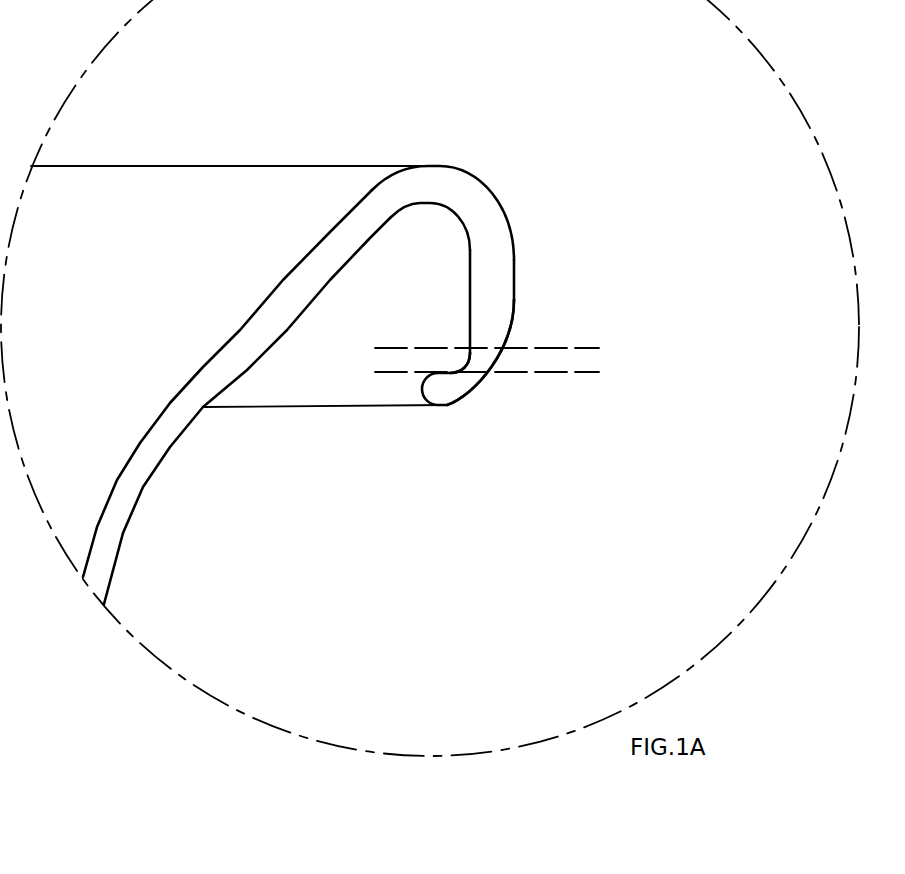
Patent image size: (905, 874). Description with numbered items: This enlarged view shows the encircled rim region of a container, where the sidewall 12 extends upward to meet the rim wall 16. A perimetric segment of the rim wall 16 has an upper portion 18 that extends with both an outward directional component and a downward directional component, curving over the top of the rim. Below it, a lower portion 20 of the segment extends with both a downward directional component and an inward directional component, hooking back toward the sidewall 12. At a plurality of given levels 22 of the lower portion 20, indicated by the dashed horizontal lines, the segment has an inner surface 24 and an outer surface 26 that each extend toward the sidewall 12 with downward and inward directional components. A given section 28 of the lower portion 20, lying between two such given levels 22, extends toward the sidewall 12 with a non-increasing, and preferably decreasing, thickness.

The sidewall 12 is at (143, 455).
The rim wall 16 is at (165, 167).
The upper portion 18 is at (448, 183).
The lower portion 20 is at (452, 389).
The given levels 22 is at (576, 347).
The inner surface 24 is at (457, 358).
The outer surface 26 is at (512, 357).
The given section 28 is at (488, 356).